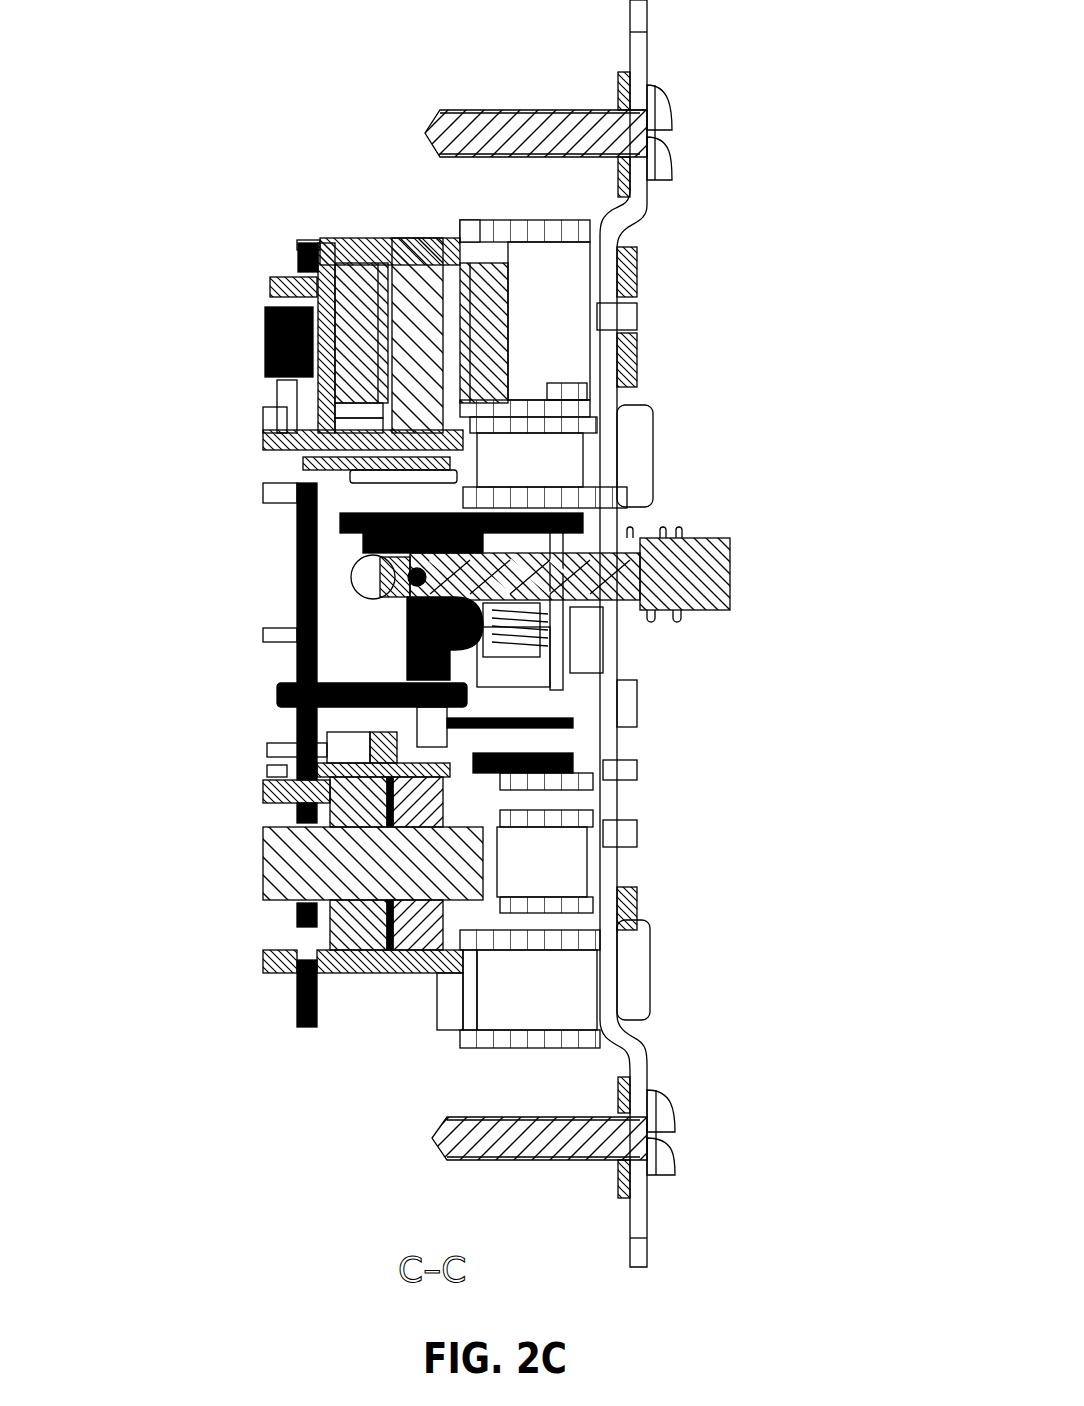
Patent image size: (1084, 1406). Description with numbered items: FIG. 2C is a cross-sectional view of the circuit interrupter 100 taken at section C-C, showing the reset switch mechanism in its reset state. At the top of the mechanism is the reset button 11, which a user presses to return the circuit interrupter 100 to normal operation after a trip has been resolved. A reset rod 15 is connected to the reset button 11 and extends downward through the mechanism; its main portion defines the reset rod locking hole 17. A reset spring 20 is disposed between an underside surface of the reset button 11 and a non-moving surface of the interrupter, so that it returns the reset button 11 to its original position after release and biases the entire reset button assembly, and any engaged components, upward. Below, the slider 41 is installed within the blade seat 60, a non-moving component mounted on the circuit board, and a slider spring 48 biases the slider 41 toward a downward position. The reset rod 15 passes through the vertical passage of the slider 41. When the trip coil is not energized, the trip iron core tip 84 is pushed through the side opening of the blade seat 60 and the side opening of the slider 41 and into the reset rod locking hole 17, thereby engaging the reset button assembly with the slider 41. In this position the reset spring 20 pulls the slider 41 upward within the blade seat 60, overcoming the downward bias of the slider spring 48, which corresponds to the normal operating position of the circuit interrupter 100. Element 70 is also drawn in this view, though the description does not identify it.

The circuit interrupter 100 is at (262, 97).
The reset button 11 is at (720, 577).
The reset rod 15 is at (306, 472).
The reset rod locking hole 17 is at (346, 508).
The reset spring 20 is at (677, 537).
The slider 41 is at (425, 628).
The slider spring 48 is at (505, 550).
The blade seat 60 is at (357, 702).
The rotor bar 70 is at (300, 990).
The trip iron core tip 84 is at (265, 529).